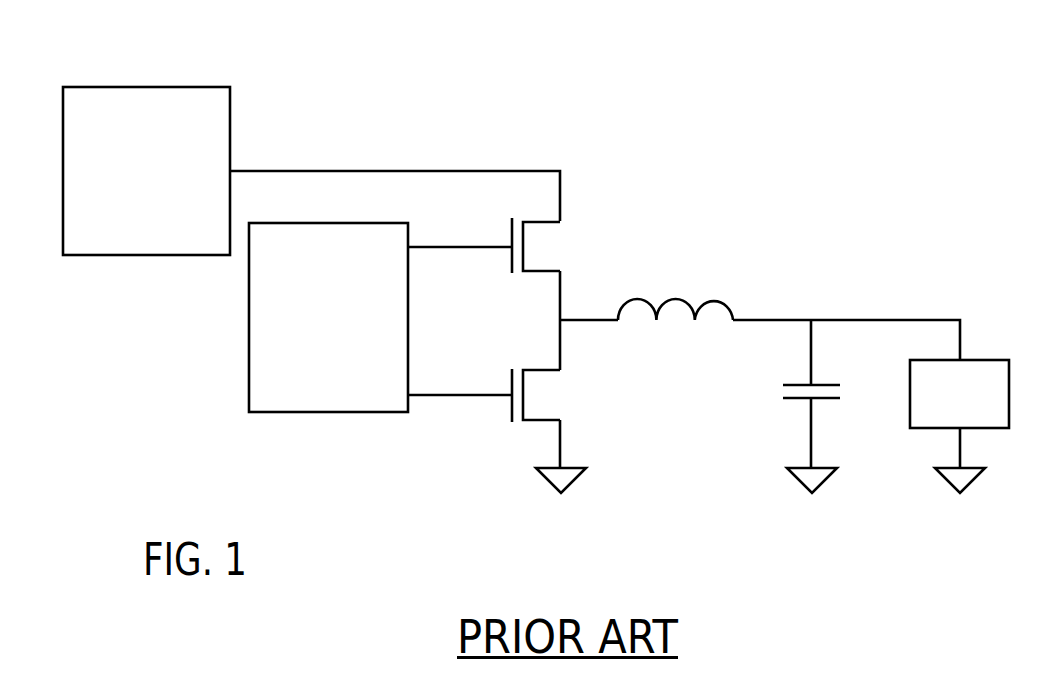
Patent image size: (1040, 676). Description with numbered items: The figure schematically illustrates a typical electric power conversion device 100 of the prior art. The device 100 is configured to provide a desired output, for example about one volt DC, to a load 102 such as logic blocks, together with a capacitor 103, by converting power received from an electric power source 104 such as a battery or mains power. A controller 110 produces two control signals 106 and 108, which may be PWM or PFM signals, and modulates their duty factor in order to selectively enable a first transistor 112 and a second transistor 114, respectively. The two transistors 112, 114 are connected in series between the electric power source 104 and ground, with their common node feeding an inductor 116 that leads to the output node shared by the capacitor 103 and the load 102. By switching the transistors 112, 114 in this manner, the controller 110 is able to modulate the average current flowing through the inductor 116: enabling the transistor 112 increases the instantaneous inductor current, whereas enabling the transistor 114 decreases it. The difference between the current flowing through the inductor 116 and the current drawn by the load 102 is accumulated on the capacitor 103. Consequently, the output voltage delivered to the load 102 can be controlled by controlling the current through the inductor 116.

The power conversion device 100 is at (740, 30).
The load 102 is at (1000, 421).
The capacitor 103 is at (780, 363).
The electric power source 104 is at (218, 247).
The control signal 106 is at (420, 247).
The control signal 108 is at (420, 395).
The controller 110 is at (397, 403).
The transistor 112 is at (572, 247).
The transistor 114 is at (544, 360).
The inductor 116 is at (700, 285).